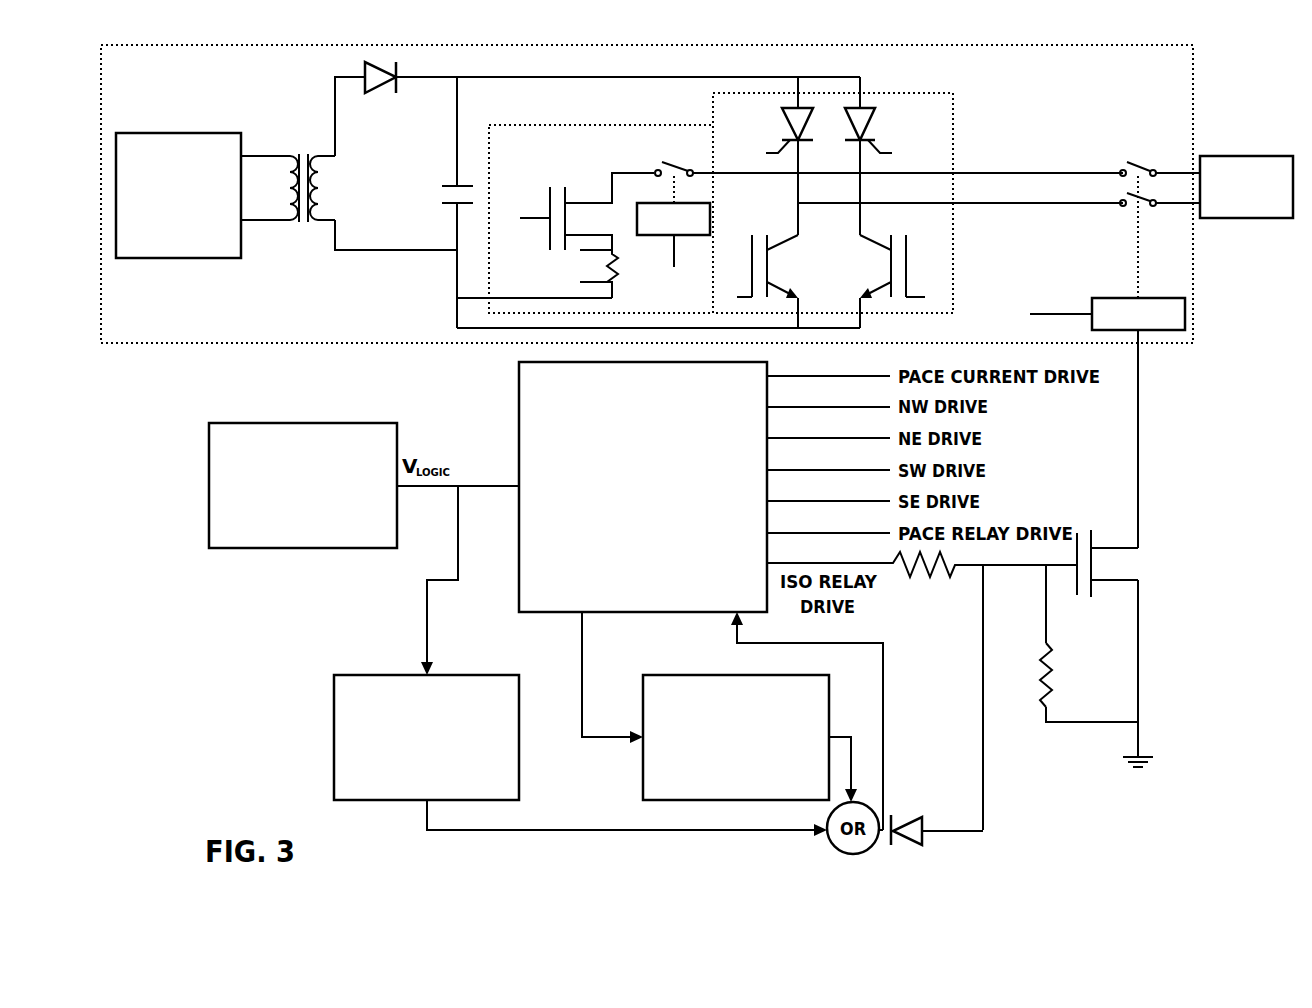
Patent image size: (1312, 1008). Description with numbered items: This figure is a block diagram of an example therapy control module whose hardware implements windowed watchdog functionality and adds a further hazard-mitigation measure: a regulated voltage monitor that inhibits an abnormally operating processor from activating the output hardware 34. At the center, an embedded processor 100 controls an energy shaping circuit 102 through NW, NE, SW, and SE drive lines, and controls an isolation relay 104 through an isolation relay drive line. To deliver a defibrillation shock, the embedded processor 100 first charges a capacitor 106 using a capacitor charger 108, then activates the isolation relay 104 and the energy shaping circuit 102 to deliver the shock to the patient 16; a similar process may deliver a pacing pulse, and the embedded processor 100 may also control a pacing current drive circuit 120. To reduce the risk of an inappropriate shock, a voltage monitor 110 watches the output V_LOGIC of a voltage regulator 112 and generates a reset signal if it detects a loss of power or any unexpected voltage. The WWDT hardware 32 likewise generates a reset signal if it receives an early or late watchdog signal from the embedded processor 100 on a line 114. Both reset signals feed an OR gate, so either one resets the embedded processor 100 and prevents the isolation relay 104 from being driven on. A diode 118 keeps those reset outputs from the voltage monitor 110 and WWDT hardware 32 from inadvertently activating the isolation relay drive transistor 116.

The output hardware 34 is at (1193, 73).
The energy shaping circuit 102 is at (953, 120).
The isolation relay 104 is at (1108, 296).
The capacitor 106 is at (445, 184).
The capacitor charger 108 is at (178, 195).
The voltage monitor 110 is at (426, 737).
The voltage regulator 112 is at (303, 485).
The line 114 is at (588, 692).
The isolation relay drive transistor 116 is at (1100, 530).
The diode 118 is at (920, 815).
The pacing current drive circuit 120 is at (528, 124).
The embedded processor 100 is at (643, 487).
The WWDT hardware 32 is at (736, 737).
The patient 16 is at (1246, 187).